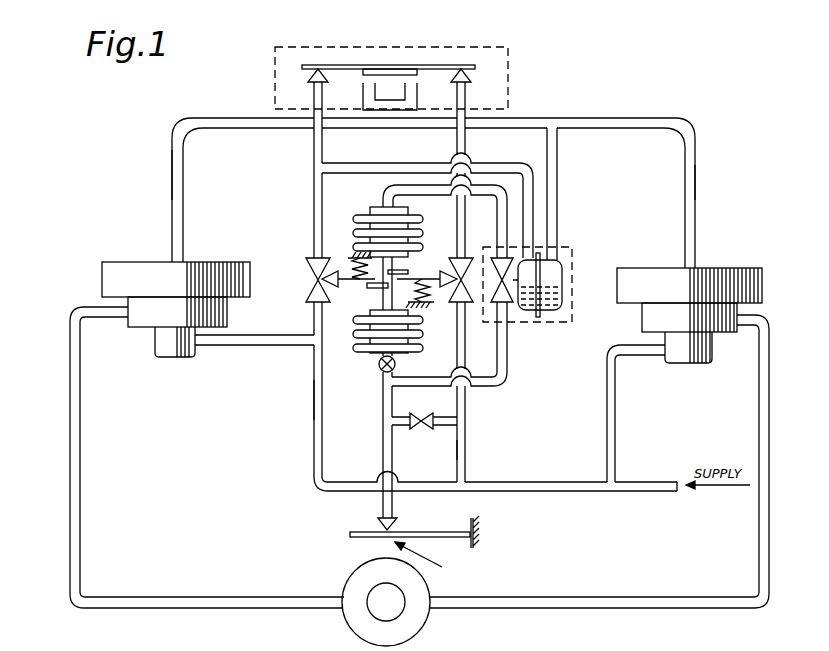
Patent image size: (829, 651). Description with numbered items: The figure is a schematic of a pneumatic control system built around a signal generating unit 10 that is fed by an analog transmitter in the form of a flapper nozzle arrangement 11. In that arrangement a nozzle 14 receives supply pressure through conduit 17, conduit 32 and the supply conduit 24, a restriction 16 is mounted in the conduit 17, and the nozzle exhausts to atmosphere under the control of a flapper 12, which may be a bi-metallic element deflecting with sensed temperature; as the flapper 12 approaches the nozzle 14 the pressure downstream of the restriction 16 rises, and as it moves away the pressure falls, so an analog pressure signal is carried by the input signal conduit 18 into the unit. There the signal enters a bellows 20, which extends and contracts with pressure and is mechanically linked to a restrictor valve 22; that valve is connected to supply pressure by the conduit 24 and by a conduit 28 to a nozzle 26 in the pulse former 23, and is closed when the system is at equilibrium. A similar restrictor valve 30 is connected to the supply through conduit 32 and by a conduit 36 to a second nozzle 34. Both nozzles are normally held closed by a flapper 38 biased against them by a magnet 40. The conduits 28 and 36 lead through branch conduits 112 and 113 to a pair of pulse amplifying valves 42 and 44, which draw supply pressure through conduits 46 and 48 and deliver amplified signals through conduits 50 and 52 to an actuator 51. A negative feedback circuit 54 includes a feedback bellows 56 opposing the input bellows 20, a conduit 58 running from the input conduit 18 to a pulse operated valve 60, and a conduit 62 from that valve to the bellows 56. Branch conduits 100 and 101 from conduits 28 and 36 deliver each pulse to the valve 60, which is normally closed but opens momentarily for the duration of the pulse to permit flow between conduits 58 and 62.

The signal generating unit 10 is at (593, 115).
The flapper nozzle arrangement 11 is at (429, 558).
The flapper 12 is at (358, 538).
The nozzle 14 is at (396, 522).
The restriction 16 is at (421, 430).
The conduit 17 is at (457, 418).
The input signal conduit 18 is at (383, 435).
The bellows 20 is at (366, 352).
The restrictor valve 22 is at (308, 272).
The pulse former 23 is at (473, 62).
The supply conduit 24 is at (312, 441).
The nozzle 26 is at (308, 78).
The conduit 28 is at (314, 155).
The restrictor valve 30 is at (452, 270).
The conduit 32 is at (466, 449).
The nozzle 34 is at (473, 79).
The conduit 36 is at (457, 142).
The flapper 38 is at (342, 65).
The magnet 40 is at (418, 88).
The pulse amplifying valve 42 is at (125, 268).
The pulse amplifying valve 44 is at (737, 272).
The conduit 46 is at (247, 340).
The conduit 48 is at (615, 425).
The conduit 50 is at (70, 462).
The actuator 51 is at (428, 620).
The conduit 52 is at (769, 400).
The negative feedback circuit 54 is at (373, 197).
The feedback bellows 56 is at (353, 215).
The conduit 58 is at (507, 348).
The pulse operated valve 60 is at (565, 272).
The conduit 62 is at (500, 214).
The branch conduit 100 is at (498, 172).
The branch conduit 101 is at (557, 155).
The branch conduit 112 is at (172, 155).
The branch conduit 113 is at (695, 176).